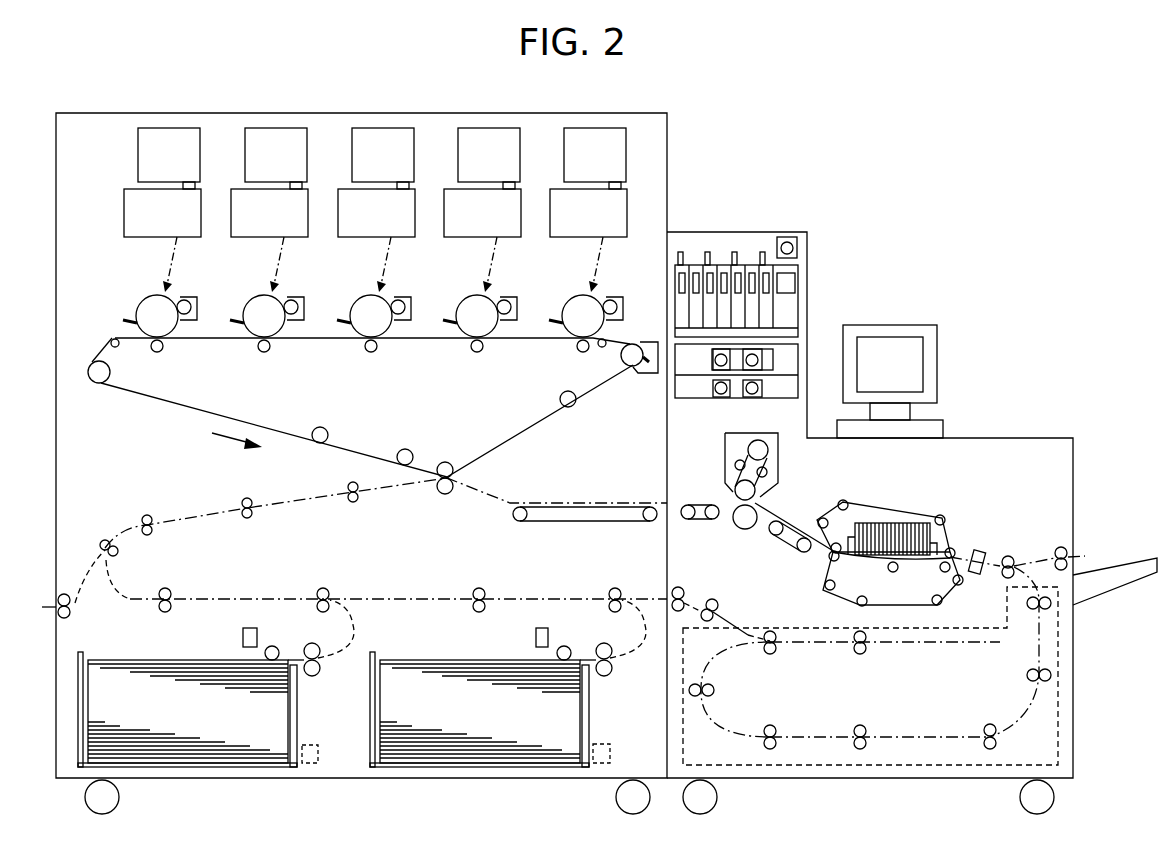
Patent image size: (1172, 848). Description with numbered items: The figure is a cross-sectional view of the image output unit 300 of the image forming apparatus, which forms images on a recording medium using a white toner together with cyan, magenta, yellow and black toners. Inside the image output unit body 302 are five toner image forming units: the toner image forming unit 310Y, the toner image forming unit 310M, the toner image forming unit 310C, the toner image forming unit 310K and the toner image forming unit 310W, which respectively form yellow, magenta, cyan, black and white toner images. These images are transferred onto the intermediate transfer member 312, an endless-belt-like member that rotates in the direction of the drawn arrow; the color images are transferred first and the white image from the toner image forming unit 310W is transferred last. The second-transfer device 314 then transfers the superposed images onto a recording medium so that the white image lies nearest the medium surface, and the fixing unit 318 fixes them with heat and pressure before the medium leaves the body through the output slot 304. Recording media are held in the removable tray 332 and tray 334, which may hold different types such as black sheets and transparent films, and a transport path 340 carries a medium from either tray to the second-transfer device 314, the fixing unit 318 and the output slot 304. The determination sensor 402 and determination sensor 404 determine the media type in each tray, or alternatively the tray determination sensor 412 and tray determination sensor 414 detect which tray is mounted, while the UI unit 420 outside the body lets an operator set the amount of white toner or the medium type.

The image output unit body 302 is at (142, 113).
The image output unit 300 is at (795, 198).
The toner image forming unit 310W is at (175, 286).
The toner image forming unit 310K is at (286, 240).
The toner image forming unit 310C is at (393, 240).
The toner image forming unit 310M is at (501, 240).
The toner image forming unit 310Y is at (604, 240).
The intermediate transfer member 312 is at (167, 402).
The second-transfer device 314 is at (445, 495).
The transport path 340 is at (290, 503).
The fixing unit 318 is at (725, 447).
The UI unit 420 is at (940, 426).
The output slot 304 is at (1068, 550).
The determination sensor 402 is at (243, 638).
The determination sensor 404 is at (536, 637).
The tray 332 is at (297, 697).
The tray 334 is at (589, 697).
The tray determination sensor 412 is at (318, 757).
The tray determination sensor 414 is at (610, 753).